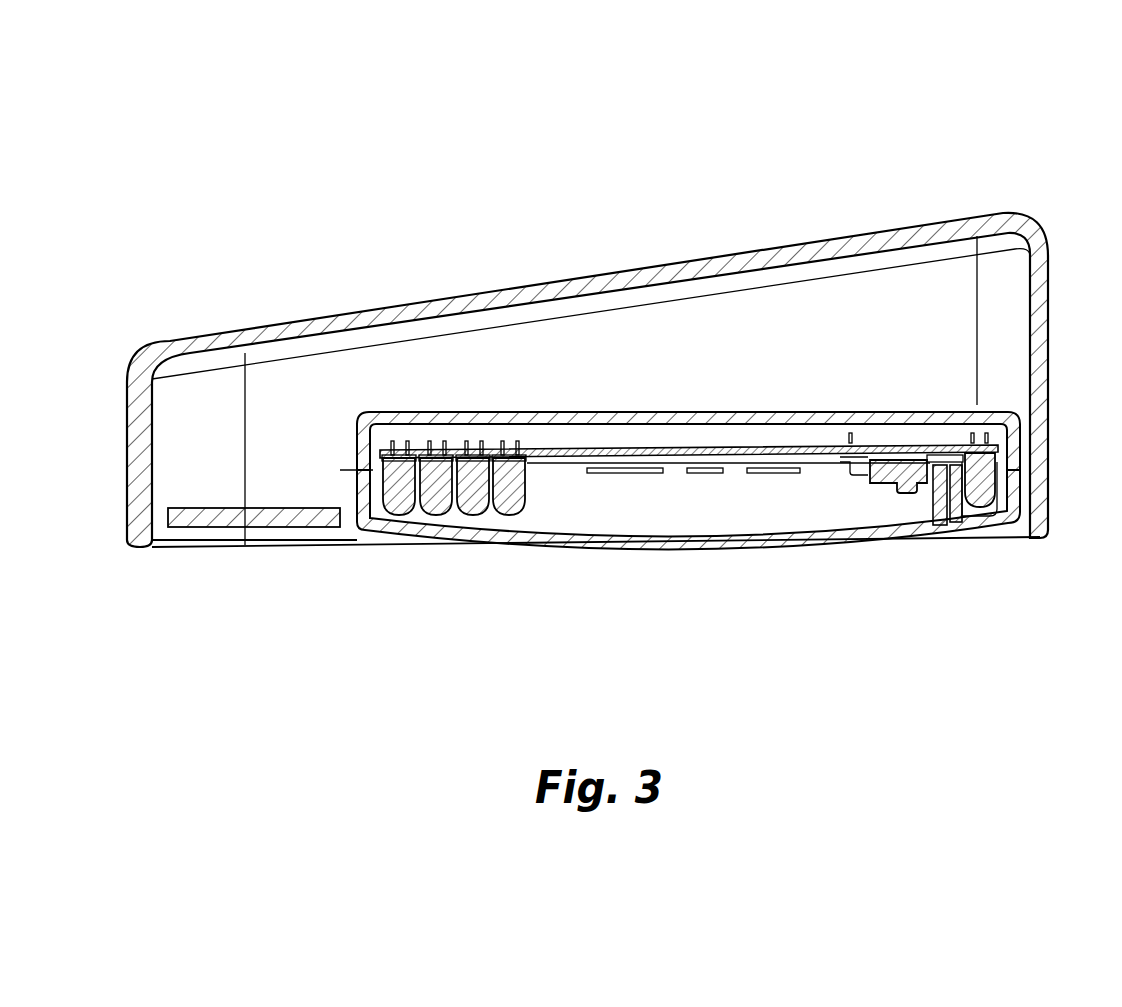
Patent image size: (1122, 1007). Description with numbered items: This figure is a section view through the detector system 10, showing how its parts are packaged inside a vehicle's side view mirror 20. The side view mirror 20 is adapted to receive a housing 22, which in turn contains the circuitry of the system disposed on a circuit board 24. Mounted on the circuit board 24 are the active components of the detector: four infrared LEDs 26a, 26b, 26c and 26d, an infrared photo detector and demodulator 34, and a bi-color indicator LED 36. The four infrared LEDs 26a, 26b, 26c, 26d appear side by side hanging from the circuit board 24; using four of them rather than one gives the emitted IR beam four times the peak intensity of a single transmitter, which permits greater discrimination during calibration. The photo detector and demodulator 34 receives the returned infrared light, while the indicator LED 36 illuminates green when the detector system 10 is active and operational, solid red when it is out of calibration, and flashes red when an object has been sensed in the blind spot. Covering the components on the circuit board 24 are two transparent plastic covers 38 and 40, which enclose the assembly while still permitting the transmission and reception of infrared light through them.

The detector system 10 is at (222, 212).
The side view mirror 20 is at (705, 257).
The housing 22 is at (675, 410).
The circuit board 24 is at (907, 445).
The infrared LED 26a is at (398, 517).
The infrared LED 26b is at (436, 517).
The infrared LED 26c is at (472, 517).
The infrared LED 26d is at (509, 517).
The infrared photo detector and demodulator 34 is at (890, 494).
The bi-color indicator LED 36 is at (995, 505).
The transparent plastic cover 38 is at (715, 550).
The transparent plastic cover 40 is at (1000, 521).